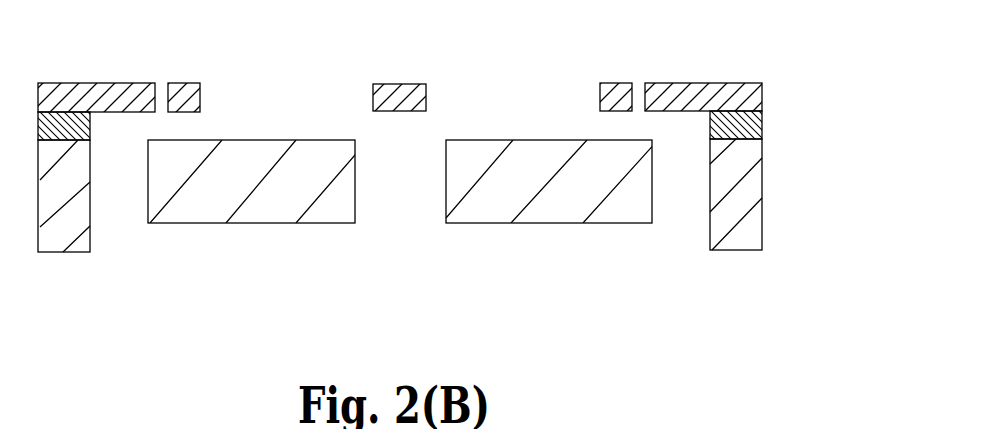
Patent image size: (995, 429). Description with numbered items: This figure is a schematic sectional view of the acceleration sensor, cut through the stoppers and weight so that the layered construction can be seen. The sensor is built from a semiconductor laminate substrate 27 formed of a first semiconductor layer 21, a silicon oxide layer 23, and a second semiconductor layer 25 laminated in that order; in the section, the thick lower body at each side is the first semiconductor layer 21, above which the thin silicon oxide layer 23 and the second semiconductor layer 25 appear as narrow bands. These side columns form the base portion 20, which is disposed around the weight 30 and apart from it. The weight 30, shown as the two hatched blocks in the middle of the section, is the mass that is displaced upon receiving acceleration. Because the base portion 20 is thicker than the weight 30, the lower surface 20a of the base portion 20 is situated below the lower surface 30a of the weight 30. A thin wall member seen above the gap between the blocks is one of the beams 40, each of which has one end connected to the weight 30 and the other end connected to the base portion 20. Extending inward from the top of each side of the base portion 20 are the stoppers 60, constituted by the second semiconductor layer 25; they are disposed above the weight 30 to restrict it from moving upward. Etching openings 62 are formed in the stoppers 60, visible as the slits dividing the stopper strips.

The base portion 20 is at (38, 278).
The lower surface of the base portion 20a is at (78, 253).
The first semiconductor layer 21 is at (748, 192).
The silicon oxide layer 23 is at (752, 118).
The second semiconductor layer 25 is at (750, 93).
The semiconductor laminate substrate 27 is at (826, 97).
The weight 30 is at (232, 208).
The lower surface of the weight 30a is at (297, 224).
The beam 40 is at (406, 92).
The stopper 60 is at (185, 82).
The etching opening 62 is at (162, 107).